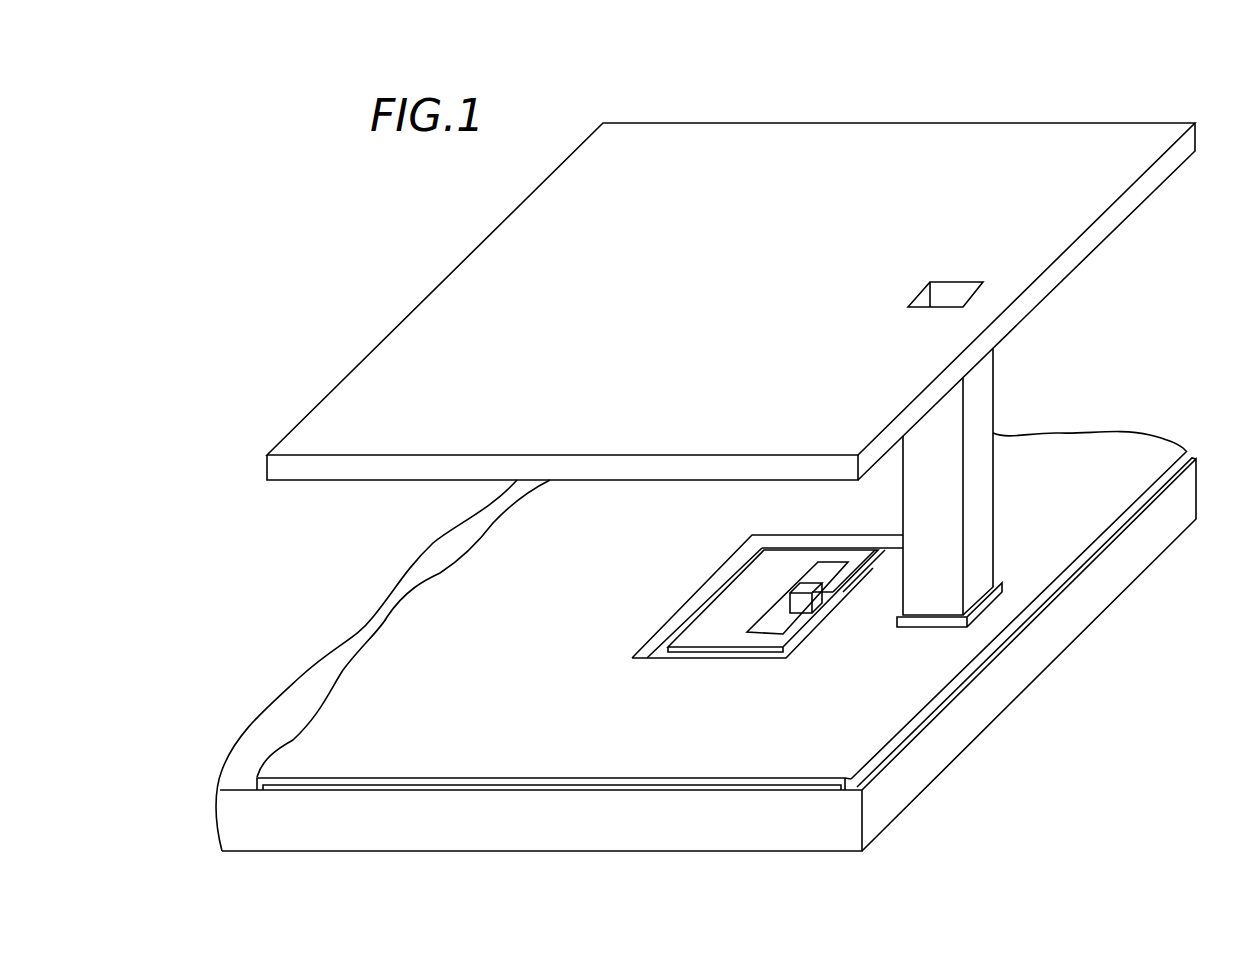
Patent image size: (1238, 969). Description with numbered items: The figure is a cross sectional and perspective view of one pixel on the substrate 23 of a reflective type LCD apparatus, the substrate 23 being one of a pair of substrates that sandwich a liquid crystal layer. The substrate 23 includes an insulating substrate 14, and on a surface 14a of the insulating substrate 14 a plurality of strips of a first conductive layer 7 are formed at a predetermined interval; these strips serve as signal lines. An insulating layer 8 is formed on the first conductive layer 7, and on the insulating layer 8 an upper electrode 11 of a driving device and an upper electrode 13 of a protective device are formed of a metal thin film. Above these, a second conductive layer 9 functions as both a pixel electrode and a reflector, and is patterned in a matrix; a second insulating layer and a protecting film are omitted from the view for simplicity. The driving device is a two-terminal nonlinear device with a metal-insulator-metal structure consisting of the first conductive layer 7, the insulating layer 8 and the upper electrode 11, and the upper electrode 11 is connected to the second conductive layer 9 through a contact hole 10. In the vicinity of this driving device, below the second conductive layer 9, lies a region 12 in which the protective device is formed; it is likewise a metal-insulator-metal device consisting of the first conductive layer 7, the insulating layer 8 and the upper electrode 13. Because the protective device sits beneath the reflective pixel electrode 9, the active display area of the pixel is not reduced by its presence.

The substrate 23 is at (696, 84).
The second conductive layer 9 is at (833, 150).
The contact hole 10 is at (957, 287).
The upper electrode of driving device 11 is at (965, 617).
The insulating substrate 14 is at (252, 826).
The surface of insulating substrate 14a is at (922, 732).
The first conductive layer 7 is at (312, 788).
The insulating layer 8 is at (833, 787).
The upper electrode of protective device 13 is at (707, 631).
The region 12 is at (799, 648).